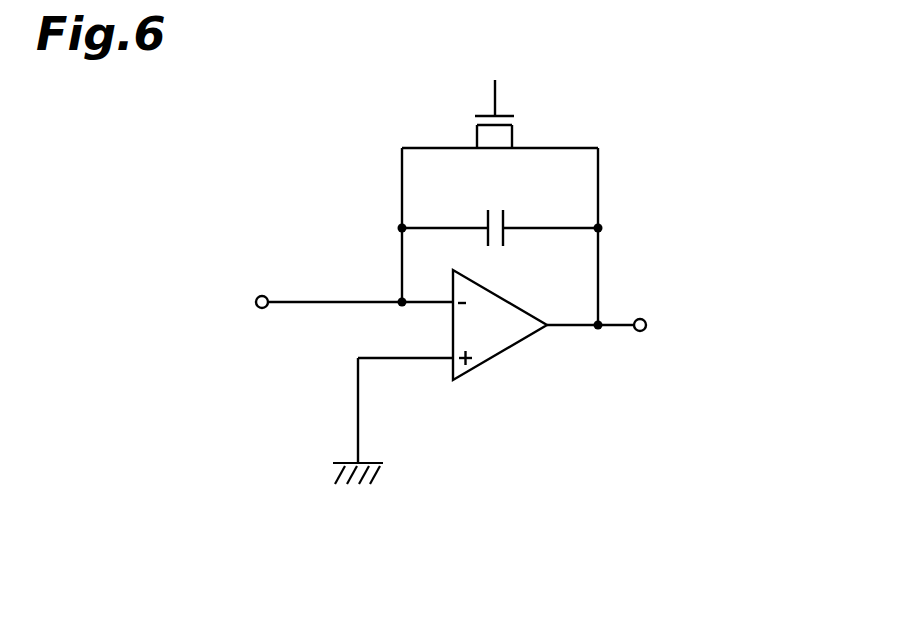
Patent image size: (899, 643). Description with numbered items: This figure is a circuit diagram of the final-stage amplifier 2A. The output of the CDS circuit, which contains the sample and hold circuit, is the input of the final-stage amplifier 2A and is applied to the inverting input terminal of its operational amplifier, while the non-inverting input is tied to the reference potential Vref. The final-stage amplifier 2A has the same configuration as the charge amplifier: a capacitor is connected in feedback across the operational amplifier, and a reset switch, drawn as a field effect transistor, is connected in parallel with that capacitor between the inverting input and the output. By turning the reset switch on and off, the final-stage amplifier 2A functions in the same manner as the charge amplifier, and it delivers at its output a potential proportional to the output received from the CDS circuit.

The reference voltage / ground Vref is at (373, 462).
The final-stage amplifier 2A is at (664, 231).